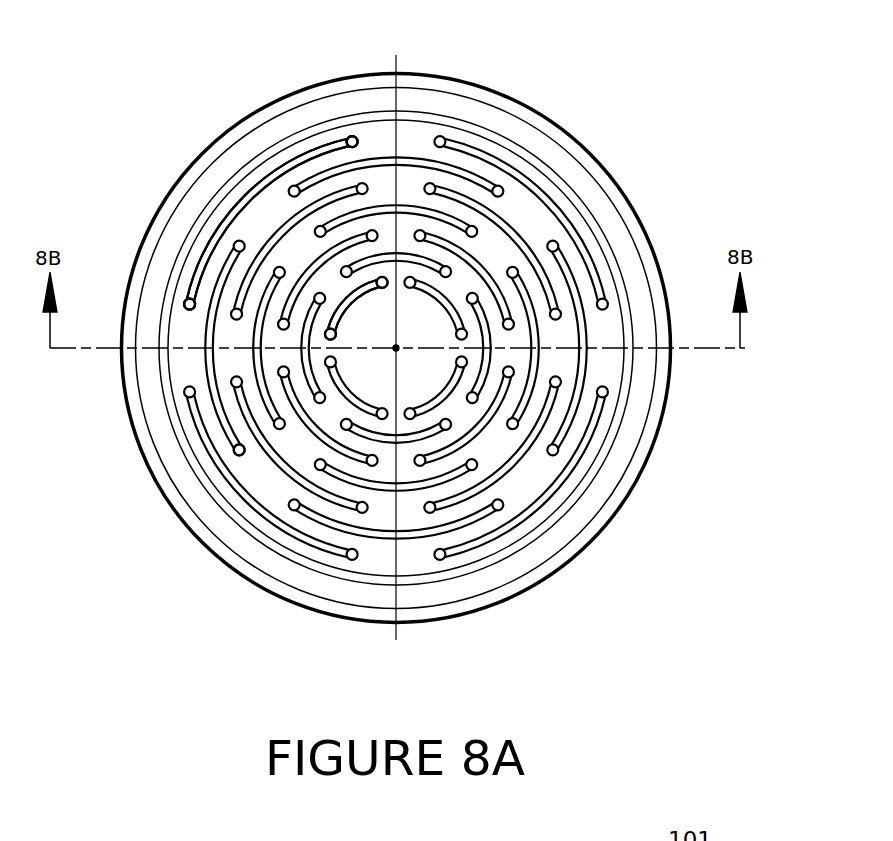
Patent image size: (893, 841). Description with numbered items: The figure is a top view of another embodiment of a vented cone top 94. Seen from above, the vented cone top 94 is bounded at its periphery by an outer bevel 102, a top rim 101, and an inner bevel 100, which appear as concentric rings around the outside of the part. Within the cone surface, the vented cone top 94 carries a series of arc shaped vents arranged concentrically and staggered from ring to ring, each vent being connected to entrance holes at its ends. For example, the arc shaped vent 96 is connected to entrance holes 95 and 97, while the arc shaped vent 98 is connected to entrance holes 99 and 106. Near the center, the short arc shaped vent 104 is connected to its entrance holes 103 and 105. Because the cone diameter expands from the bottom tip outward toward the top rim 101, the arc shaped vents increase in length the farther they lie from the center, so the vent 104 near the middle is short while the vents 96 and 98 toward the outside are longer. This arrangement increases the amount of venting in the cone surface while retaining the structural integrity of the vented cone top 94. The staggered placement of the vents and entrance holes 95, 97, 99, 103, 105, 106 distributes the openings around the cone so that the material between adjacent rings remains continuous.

The vented cone top 94 is at (130, 170).
The entrance hole 95 is at (237, 457).
The arc shaped vent 96 is at (207, 351).
The entrance hole 97 is at (227, 230).
The arc shaped vent 98 is at (240, 200).
The entrance hole 99 is at (352, 138).
The inner bevel 100 is at (550, 177).
The top rim 101 is at (598, 200).
The outer bevel 102 is at (645, 245).
The entrance hole 103 is at (394, 346).
The arc shaped vent 104 is at (398, 350).
The entrance hole 105 is at (383, 291).
The entrance hole 106 is at (185, 303).